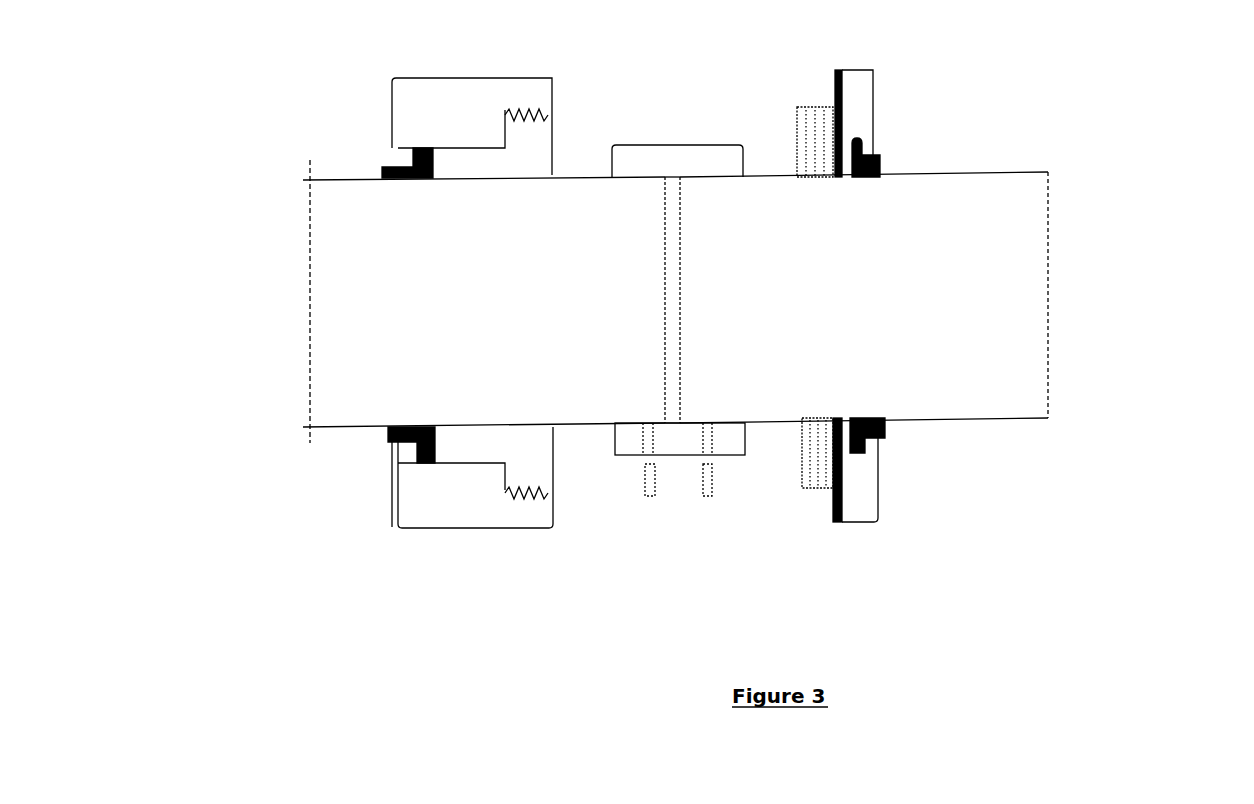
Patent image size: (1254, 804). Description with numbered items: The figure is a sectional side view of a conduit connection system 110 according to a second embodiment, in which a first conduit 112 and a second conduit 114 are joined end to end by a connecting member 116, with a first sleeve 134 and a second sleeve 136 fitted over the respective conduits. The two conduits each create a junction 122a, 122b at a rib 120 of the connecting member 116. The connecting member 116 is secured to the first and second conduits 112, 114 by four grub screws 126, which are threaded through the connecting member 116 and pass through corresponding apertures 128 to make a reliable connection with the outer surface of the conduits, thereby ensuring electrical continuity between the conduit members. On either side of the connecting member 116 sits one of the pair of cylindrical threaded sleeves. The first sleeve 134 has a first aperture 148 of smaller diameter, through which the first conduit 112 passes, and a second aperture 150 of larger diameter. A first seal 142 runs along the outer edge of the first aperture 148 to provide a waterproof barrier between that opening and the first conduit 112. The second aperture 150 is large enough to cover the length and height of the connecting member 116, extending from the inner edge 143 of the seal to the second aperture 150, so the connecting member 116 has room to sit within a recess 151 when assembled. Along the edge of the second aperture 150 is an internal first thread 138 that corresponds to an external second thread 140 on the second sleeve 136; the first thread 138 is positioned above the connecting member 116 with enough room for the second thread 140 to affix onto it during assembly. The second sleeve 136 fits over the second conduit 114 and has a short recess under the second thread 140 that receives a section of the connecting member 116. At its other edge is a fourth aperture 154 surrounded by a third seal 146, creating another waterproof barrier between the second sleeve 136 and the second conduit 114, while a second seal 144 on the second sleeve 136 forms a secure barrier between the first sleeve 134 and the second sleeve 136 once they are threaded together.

The conduit connection system 110 is at (317, 527).
The first conduit 112 is at (363, 342).
The second conduit 114 is at (945, 202).
The connecting member 116 is at (648, 130).
The rib 120 is at (655, 230).
The junction 122a is at (665, 358).
The junction 122b is at (680, 350).
The grub screws 126 is at (650, 480).
The apertures 128 is at (652, 437).
The first sleeve 134 is at (422, 123).
The second sleeve 136 is at (855, 78).
The first thread 138 is at (548, 140).
The second thread 140 is at (827, 132).
The first seal 142 is at (390, 167).
The inner edge 143 is at (413, 152).
The second seal 144 is at (843, 102).
The third seal 146 is at (874, 158).
The first aperture 148 is at (367, 177).
The second aperture 150 is at (505, 127).
The recess 151 is at (520, 155).
The fourth aperture 154 is at (882, 165).